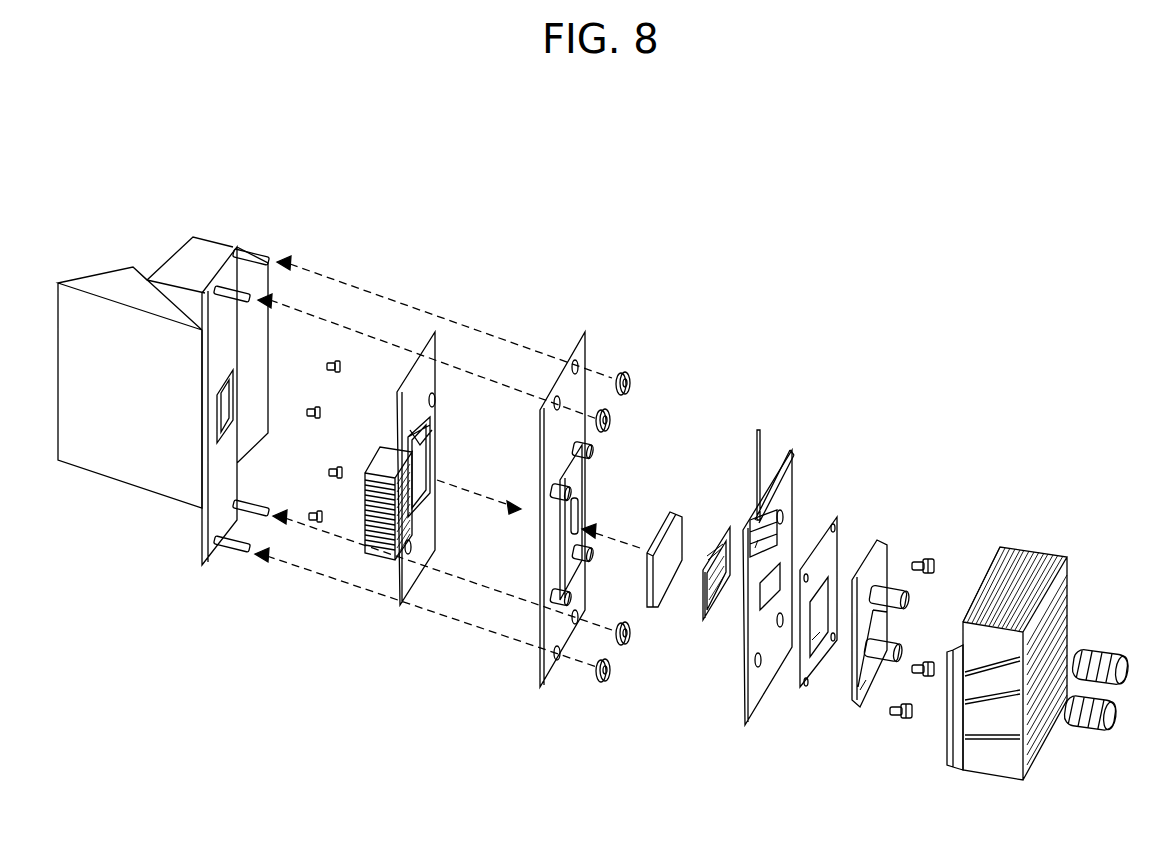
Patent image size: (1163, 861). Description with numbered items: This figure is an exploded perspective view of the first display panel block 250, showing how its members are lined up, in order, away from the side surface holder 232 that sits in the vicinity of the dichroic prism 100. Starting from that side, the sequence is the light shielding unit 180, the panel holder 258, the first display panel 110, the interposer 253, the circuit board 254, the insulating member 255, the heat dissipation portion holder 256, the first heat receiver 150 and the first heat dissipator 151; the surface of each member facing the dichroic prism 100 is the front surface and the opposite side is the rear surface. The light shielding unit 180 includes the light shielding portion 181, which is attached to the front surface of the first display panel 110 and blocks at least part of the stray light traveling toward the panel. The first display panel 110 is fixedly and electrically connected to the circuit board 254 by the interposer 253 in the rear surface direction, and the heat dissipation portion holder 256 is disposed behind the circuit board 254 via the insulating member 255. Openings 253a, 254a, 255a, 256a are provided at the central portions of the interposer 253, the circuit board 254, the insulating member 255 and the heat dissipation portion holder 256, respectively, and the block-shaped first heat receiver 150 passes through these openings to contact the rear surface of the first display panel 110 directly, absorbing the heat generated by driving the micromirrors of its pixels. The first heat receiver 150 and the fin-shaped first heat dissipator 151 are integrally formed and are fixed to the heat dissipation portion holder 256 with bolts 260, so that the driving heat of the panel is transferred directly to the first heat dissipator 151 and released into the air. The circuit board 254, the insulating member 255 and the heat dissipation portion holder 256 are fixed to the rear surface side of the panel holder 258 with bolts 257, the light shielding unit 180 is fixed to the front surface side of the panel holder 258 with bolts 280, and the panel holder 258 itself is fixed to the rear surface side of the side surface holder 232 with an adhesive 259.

The dichroic prism 100 is at (140, 460).
The first display panel 110 is at (673, 507).
The first heat receiver 150 is at (950, 677).
The first heat dissipator 151 is at (993, 760).
The light shielding unit 180 is at (457, 338).
The light shielding portion 181 is at (433, 517).
The side surface holder 232 is at (233, 247).
The first display panel block 250 is at (746, 180).
The interposer 253 is at (703, 595).
The opening 253a is at (727, 600).
The circuit board 254 is at (790, 470).
The opening 254a is at (760, 595).
The insulating member 255 is at (833, 525).
The opening 255a is at (813, 663).
The heat dissipation portion holder 256 is at (883, 547).
The opening 256a is at (873, 677).
The bolts 257 is at (935, 557).
The panel holder 258 is at (583, 330).
The adhesive 259 is at (625, 370).
The bolts 260 is at (1100, 650).
The bolts 280 is at (333, 363).